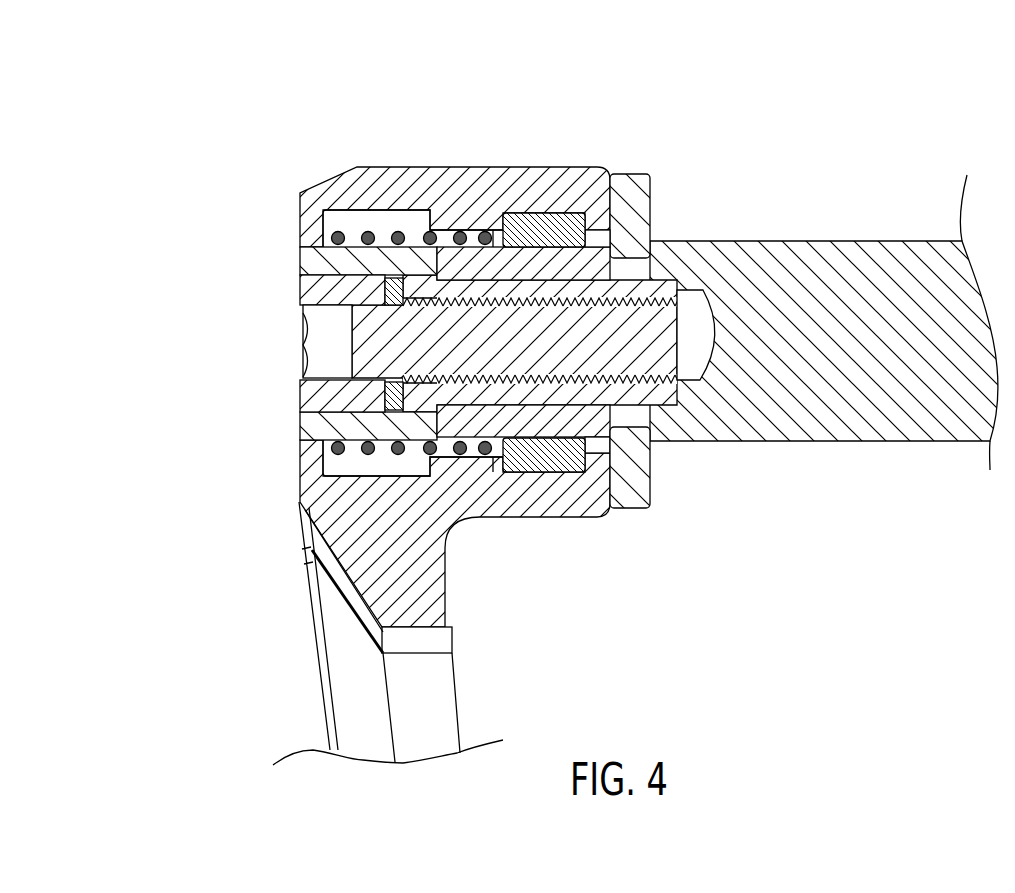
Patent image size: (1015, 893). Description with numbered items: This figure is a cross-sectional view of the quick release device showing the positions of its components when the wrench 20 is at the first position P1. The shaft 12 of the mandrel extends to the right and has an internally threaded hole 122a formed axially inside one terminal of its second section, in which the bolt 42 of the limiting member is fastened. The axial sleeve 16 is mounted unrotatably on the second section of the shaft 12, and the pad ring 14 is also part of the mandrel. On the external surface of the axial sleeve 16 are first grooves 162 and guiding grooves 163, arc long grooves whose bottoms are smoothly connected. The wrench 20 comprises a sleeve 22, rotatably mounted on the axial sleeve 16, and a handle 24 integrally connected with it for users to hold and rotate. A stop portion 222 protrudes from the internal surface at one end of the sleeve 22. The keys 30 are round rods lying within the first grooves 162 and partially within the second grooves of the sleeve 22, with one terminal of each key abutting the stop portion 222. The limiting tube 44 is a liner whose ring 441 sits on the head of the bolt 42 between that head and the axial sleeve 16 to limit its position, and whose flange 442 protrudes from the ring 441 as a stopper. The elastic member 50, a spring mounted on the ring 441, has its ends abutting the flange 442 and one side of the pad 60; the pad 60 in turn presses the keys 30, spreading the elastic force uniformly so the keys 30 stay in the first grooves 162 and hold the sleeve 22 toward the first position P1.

The first position P1 is at (316, 162).
The shaft 12 is at (920, 413).
The internally threaded hole 122a is at (710, 380).
The pad ring 14 is at (640, 492).
The axial sleeve 16 is at (612, 236).
The first grooves 162 is at (592, 235).
The guiding grooves 163 is at (477, 253).
The wrench 20 is at (683, 590).
The sleeve 22 is at (512, 503).
The stop portion 222 is at (598, 462).
The handle 24 is at (423, 693).
The keys 30 is at (557, 220).
The bolt 42 is at (313, 288).
The limiting tube 44 is at (105, 167).
The ring 441 is at (322, 257).
The flange 442 is at (317, 232).
The elastic member 50 is at (400, 228).
The pad 60 is at (500, 230).